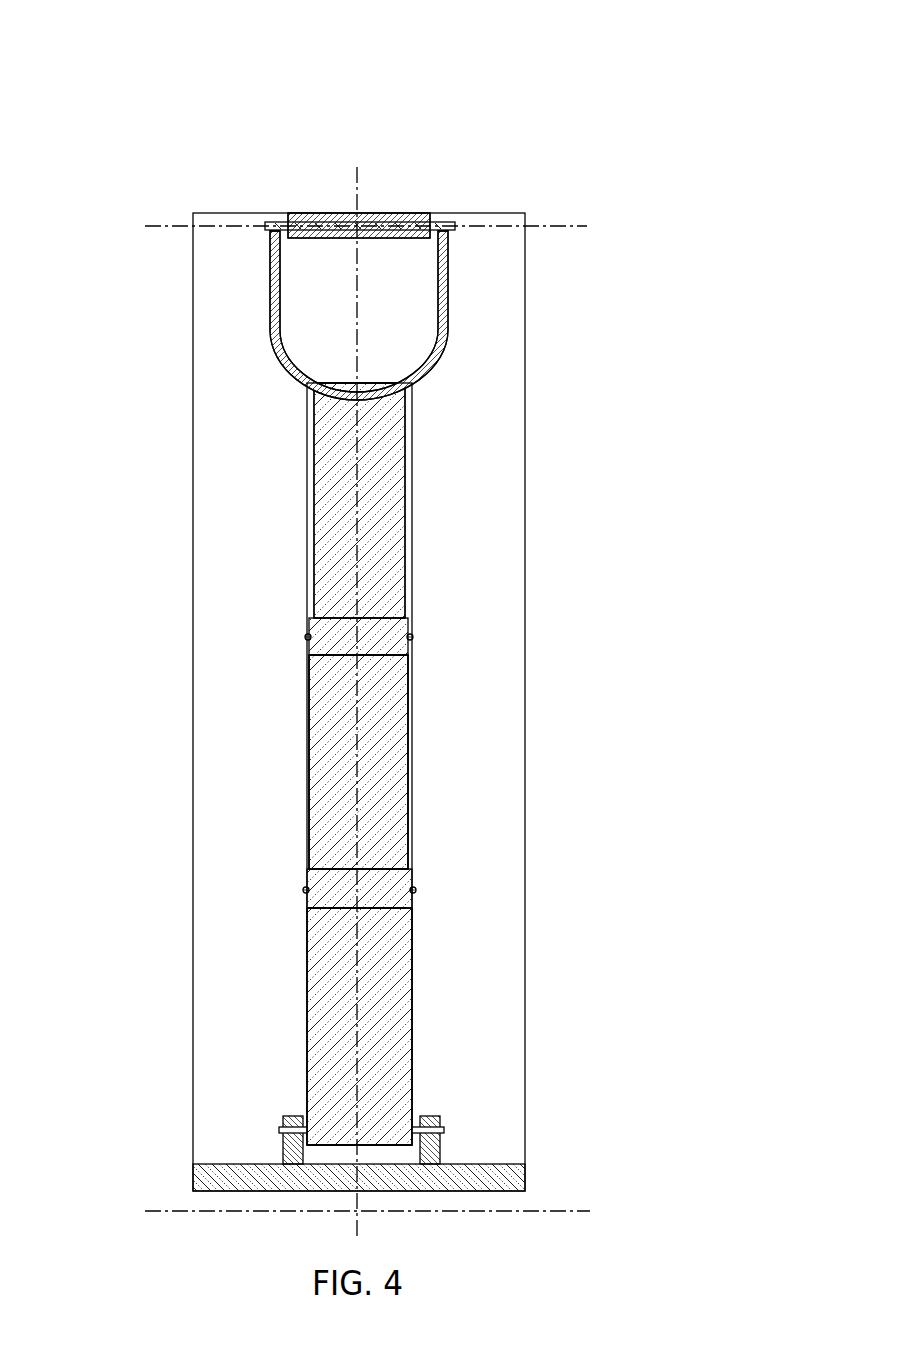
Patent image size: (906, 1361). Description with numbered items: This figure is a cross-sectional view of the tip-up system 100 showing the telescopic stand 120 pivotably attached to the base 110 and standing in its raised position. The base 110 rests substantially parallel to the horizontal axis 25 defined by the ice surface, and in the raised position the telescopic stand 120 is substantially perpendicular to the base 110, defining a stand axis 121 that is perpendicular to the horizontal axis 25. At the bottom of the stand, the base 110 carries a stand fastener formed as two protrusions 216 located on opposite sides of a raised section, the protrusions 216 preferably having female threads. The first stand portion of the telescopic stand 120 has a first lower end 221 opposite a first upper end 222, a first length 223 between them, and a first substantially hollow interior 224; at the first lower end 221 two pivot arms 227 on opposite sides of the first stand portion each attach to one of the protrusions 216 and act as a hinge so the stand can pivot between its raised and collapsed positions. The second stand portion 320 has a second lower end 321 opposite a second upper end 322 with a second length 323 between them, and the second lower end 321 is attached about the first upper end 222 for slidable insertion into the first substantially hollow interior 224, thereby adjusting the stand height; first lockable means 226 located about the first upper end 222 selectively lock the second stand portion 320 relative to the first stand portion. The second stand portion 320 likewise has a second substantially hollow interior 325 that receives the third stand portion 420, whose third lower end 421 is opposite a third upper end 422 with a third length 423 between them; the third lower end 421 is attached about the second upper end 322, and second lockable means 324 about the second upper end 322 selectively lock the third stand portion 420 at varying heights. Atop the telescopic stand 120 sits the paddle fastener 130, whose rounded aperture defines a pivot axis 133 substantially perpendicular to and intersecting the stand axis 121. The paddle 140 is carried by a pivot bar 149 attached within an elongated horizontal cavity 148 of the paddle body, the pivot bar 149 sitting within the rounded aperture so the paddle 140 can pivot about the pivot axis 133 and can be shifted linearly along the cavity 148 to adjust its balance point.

The tip-up system 100 is at (648, 92).
The base 110 is at (516, 1180).
The telescopic stand 120 is at (496, 727).
The stand axis 121 is at (357, 1220).
The paddle fastener 130 is at (447, 320).
The pivot axis 133 is at (520, 228).
The paddle 140 is at (395, 192).
The elongated horizontal cavity 148 is at (314, 213).
The pivot bar 149 is at (432, 213).
The protrusions 216 is at (278, 1132).
The first lower end 221 is at (330, 1140).
The first upper end 222 is at (397, 873).
The first length 223 is at (330, 1025).
The first substantially hollow interior 224 is at (343, 985).
The first lockable means 226 is at (306, 887).
The pivot arms 227 is at (283, 1122).
The horizontal axis 25 is at (170, 1208).
The second stand portion 320 is at (327, 750).
The second lower end 321 is at (377, 900).
The second upper end 322 is at (385, 627).
The second length 323 is at (383, 768).
The second lockable means 324 is at (308, 637).
The second substantially hollow interior 325 is at (333, 793).
The third stand portion 420 is at (328, 553).
The third lower end 421 is at (333, 655).
The third upper end 422 is at (313, 388).
The third length 423 is at (390, 475).